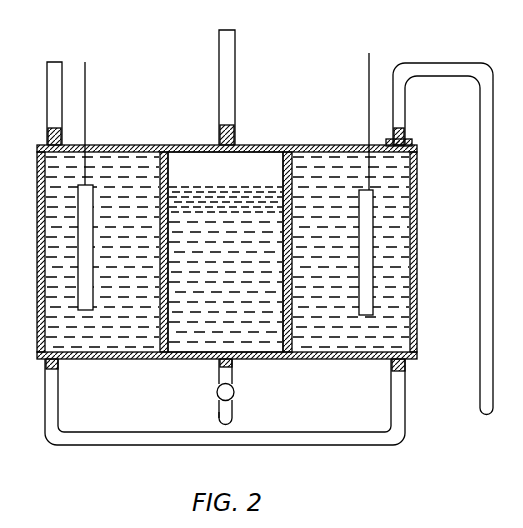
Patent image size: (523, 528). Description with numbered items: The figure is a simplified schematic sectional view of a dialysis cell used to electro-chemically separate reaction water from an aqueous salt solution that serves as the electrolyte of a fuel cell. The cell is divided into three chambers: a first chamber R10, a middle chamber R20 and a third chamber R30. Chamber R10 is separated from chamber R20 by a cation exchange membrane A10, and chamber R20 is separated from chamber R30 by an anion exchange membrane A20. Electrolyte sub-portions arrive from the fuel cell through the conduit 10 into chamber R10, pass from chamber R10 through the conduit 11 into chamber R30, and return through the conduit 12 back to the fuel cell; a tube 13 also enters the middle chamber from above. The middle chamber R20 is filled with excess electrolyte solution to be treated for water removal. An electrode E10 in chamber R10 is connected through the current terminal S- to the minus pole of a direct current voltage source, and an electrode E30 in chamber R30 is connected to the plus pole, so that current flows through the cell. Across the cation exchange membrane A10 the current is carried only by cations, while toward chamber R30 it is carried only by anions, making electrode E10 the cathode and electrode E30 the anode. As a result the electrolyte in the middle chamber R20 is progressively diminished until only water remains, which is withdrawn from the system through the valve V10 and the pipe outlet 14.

The conduit 10 is at (47, 93).
The conduit 11 is at (55, 388).
The conduit 12 is at (476, 79).
The center tube 13 is at (235, 90).
The pipe outlet 14 is at (232, 415).
The current terminal S- is at (85, 93).
The cation exchange membrane A10 is at (172, 145).
The anion exchange membrane A20 is at (291, 145).
The chamber R10 is at (42, 226).
The middle chamber R20 is at (208, 352).
The chamber R30 is at (414, 228).
The electrode E10 is at (78, 250).
The electrode E30 is at (373, 265).
The valve V10 is at (234, 392).